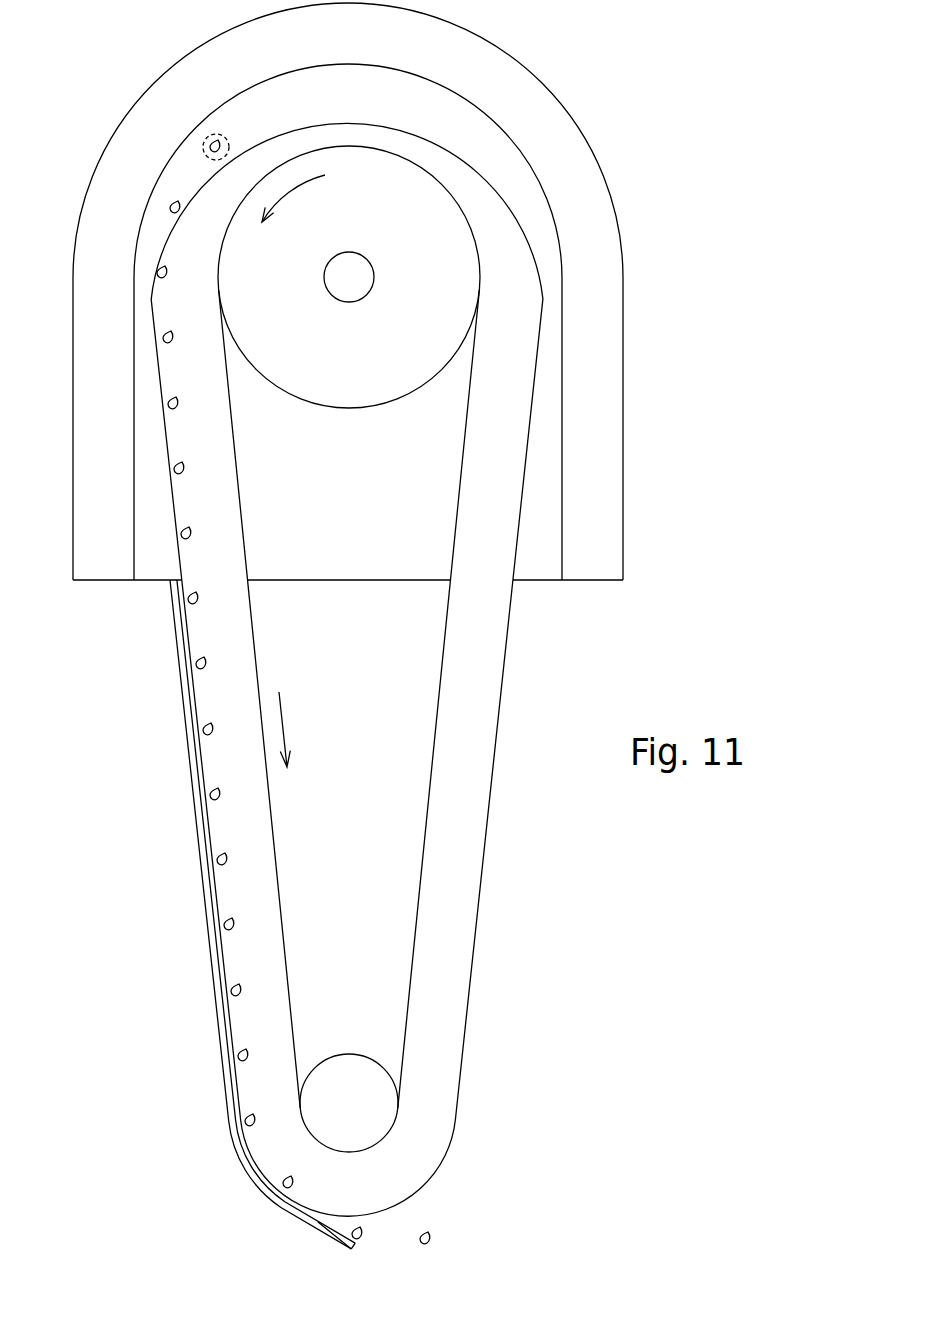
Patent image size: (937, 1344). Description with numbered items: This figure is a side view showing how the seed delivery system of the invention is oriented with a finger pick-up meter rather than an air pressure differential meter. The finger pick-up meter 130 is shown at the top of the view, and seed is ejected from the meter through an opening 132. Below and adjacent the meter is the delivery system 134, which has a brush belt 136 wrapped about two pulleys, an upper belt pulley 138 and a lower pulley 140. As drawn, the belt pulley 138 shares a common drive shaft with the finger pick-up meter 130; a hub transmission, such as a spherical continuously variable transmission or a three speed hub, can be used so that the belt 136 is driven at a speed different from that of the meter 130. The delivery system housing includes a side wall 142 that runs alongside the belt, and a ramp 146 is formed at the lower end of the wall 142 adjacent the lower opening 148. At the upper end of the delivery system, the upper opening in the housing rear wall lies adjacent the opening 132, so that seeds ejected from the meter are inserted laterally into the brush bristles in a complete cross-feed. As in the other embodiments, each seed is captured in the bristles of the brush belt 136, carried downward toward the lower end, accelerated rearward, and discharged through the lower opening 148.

The finger pick-up meter 130 is at (588, 157).
The opening 132 is at (229, 148).
The delivery system 134 is at (508, 983).
The brush belt 136 is at (473, 870).
The belt pulley 138 is at (368, 395).
The pulley 140 is at (358, 1058).
The side wall 142 is at (183, 683).
The ramp 146 is at (298, 1215).
The lower opening 148 is at (390, 1240).